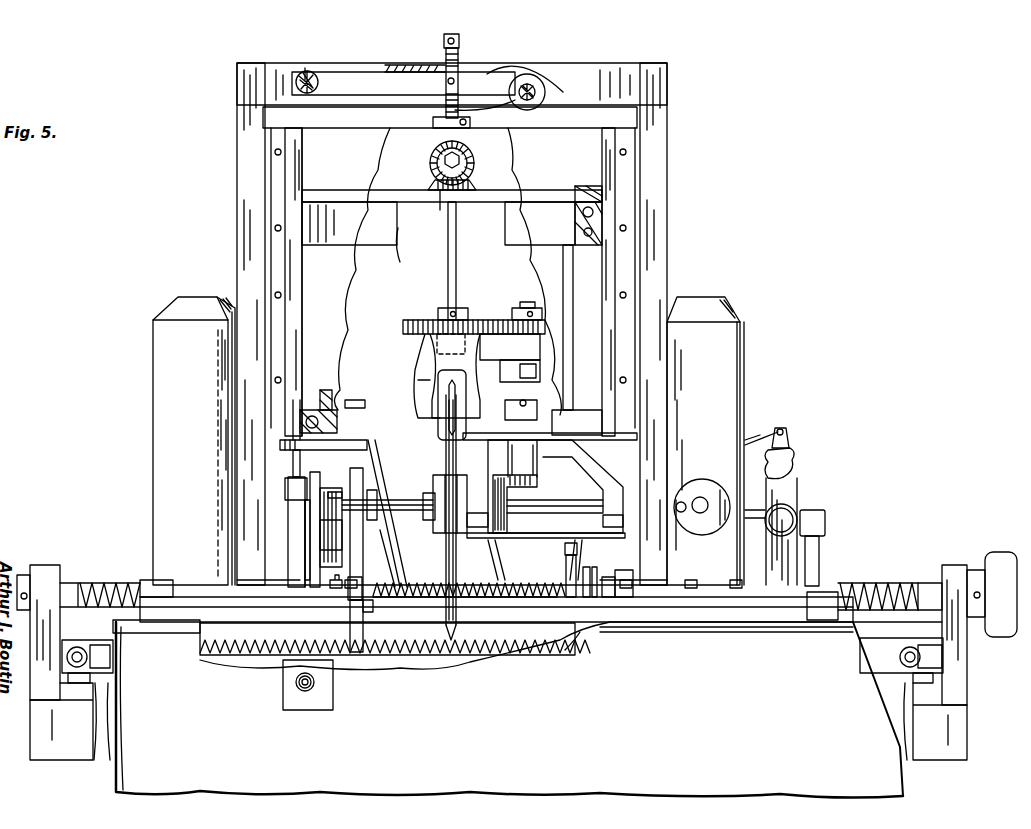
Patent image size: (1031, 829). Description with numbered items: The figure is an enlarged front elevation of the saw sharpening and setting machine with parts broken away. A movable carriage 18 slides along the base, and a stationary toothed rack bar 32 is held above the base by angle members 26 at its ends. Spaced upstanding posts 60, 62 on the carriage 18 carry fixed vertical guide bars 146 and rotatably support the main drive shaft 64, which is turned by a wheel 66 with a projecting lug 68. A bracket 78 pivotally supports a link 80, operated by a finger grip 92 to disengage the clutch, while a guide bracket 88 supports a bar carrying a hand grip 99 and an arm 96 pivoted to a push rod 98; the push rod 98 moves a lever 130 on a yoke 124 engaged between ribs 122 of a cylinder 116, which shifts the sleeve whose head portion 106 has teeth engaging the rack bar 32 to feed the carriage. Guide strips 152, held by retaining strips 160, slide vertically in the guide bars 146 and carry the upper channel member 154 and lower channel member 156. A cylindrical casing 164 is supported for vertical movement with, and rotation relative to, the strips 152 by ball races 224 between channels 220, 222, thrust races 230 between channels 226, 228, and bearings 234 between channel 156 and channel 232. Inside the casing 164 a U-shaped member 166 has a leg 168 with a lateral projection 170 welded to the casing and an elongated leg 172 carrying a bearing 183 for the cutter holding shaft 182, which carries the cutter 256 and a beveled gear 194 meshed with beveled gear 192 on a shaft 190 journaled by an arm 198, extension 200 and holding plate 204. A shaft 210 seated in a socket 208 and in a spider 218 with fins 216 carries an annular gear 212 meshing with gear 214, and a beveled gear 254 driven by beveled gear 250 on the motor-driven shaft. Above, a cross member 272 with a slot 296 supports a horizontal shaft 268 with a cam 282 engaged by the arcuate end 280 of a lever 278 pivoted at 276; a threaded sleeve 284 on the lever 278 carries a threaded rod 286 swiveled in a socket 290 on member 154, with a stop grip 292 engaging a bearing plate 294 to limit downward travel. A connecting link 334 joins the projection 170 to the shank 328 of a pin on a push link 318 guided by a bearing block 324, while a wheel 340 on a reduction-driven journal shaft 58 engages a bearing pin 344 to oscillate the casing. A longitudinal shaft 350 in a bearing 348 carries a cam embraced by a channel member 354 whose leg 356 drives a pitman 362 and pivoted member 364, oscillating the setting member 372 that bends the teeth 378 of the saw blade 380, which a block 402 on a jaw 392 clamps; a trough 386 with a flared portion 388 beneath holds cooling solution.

The carriage 18 is at (945, 752).
The angle members 26 is at (46, 565).
The rack bar 32 is at (868, 583).
The journal shaft 58 is at (404, 556).
The upstanding post 60 is at (740, 376).
The upstanding post 62 is at (170, 342).
The main drive shaft 64 is at (705, 498).
The finger grip or wheel 66 is at (702, 527).
The projecting lug 68 is at (683, 500).
The upstanding bracket 78 is at (820, 530).
The link 80 is at (826, 516).
The guide bracket 88 is at (790, 562).
The finger grip 92 is at (797, 508).
The laterally projecting arm 96 is at (790, 432).
The push rod 98 is at (760, 435).
The hand grip 99 is at (790, 462).
The head portion of sleeve 106 is at (622, 592).
The cylinder 116 is at (596, 597).
The annular ribs 122 is at (557, 597).
The yoke 124 is at (577, 562).
The lever or arm 130 is at (578, 546).
The vertical guide bars 146 is at (245, 235).
The guide bars or strips 152 is at (290, 150).
The upper channel shaped member 154 is at (449, 282).
The lower annular channel shaped member 156 is at (550, 425).
The retaining strips 160 is at (265, 184).
The cylindrical casing 164 is at (560, 288).
The U-shaped member 166 is at (425, 358).
The leg 168 is at (420, 382).
The lateral projection 170 is at (390, 435).
The leg 172 is at (475, 402).
The cutter holding shaft 182 is at (548, 508).
The bearing 183 is at (608, 495).
The shaft 190 is at (530, 408).
The beveled gear 192 is at (530, 480).
The beveled gear 194 is at (510, 525).
The arm 198 is at (503, 368).
The enlarged extension 200 is at (485, 370).
The holding plate 204 is at (540, 370).
The socket 208 is at (415, 340).
The shaft 210 is at (457, 265).
The annular gear 212 is at (415, 318).
The annular gear 214 is at (510, 318).
The radial arms or fins 216 is at (408, 252).
The spider 218 is at (447, 222).
The upper annular channel member 220 is at (585, 195).
The annular channel member 222 is at (594, 214).
The ball bearing races 224 is at (600, 200).
The annular channel member 226 is at (575, 240).
The annular channel member 228 is at (594, 232).
The companion ball races 230 is at (575, 225).
The annular channel member 232 is at (357, 395).
The annular ball races or bearings 234 is at (337, 422).
The beveled gear 250 is at (430, 158).
The beveled gear 254 is at (477, 180).
The cutter blade or tool 256 is at (446, 552).
The horizontal shaft 268 is at (533, 86).
The channeled cross member 272 is at (662, 108).
The pivot 276 is at (308, 71).
The lever 278 is at (378, 70).
The arcuate end portion 280 is at (515, 70).
The cam 282 is at (546, 90).
The internally threaded sleeve 284 is at (445, 84).
The externally threaded rod 286 is at (460, 62).
The socket 290 is at (464, 126).
The stop and hand grip 292 is at (443, 40).
The bearing plate 294 is at (420, 70).
The longitudinal slot 296 is at (505, 106).
The push link 318 is at (288, 488).
The bearing block 324 is at (305, 510).
The shank portion 328 is at (293, 460).
The connecting link 334 is at (285, 443).
The wheel 340 is at (330, 518).
The bearing pin 344 is at (315, 516).
The bearing 348 is at (330, 532).
The longitudinal shaft 350 is at (388, 497).
The U-shaped channel member 354 is at (363, 474).
The elongated leg portion 356 is at (348, 590).
The pitman 362 is at (375, 597).
The pivoted member 364 is at (350, 620).
The saw tooth setting member 372 is at (358, 652).
The teeth 378 is at (570, 655).
The saw blade 380 is at (478, 655).
The trough 386 is at (890, 778).
The outer forward portion of trough 388 is at (728, 640).
The jaw 392 is at (322, 700).
The block 402 is at (518, 668).